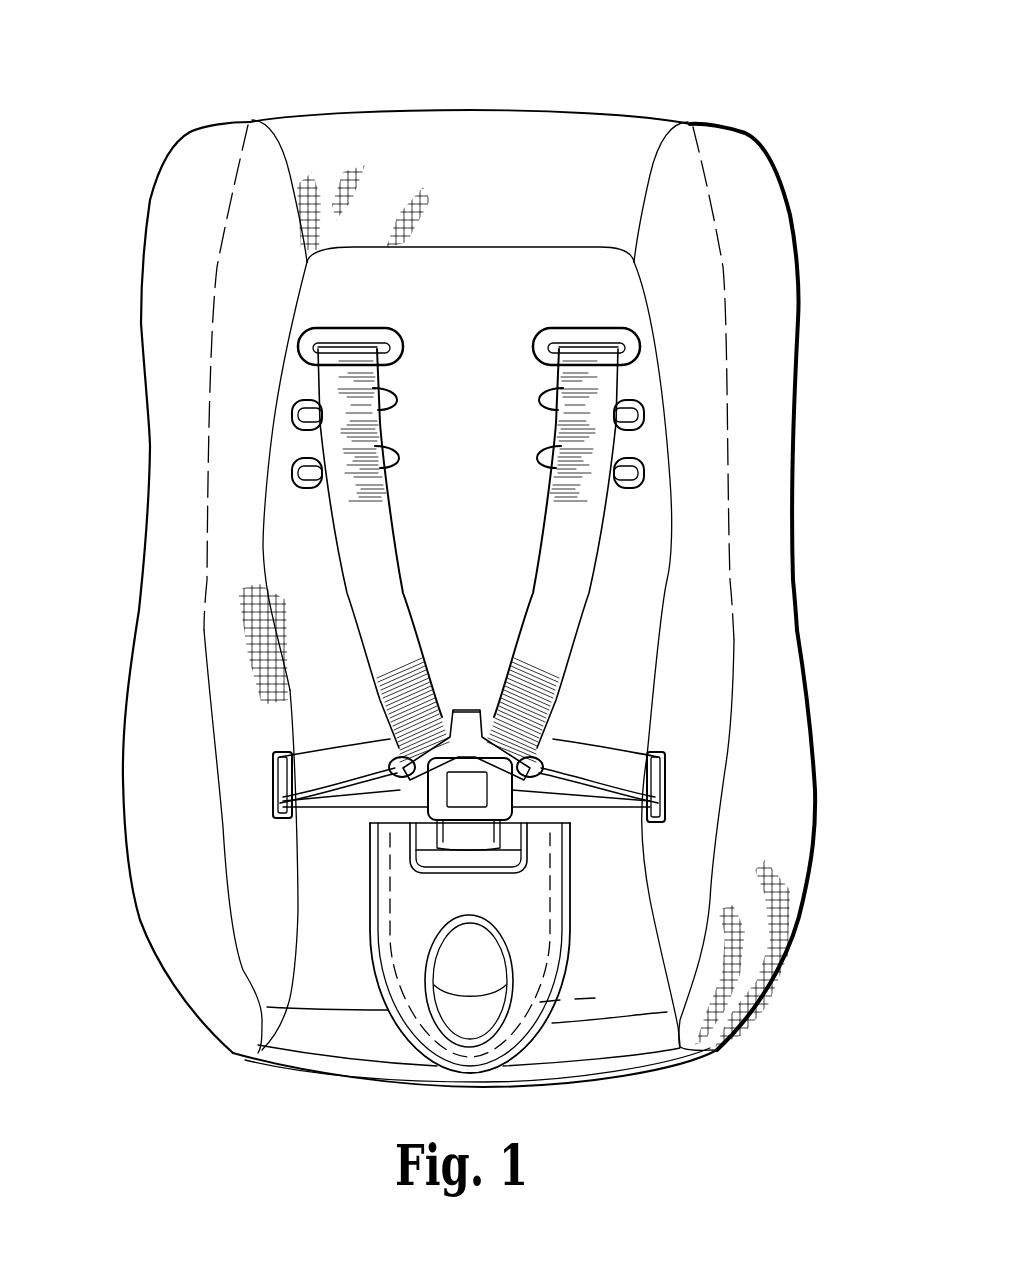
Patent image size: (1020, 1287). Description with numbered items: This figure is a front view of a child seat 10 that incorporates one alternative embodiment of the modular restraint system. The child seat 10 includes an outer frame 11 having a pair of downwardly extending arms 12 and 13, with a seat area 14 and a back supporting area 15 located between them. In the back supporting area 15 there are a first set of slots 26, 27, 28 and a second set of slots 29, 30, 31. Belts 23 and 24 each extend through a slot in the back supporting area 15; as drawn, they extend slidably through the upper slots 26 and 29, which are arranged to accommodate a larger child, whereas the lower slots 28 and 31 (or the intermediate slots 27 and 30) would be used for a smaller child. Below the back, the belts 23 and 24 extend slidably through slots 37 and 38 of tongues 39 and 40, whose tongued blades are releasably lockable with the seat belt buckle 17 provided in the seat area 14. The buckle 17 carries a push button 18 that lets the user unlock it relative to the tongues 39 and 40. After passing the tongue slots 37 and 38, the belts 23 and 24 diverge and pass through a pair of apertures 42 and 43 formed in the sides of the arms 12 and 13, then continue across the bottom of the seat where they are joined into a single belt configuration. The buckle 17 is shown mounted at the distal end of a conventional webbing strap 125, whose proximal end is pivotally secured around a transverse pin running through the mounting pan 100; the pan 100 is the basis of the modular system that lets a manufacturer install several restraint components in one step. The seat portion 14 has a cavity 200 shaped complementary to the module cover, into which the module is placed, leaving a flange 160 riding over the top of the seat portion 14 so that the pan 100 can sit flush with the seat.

The child seat 10 is at (590, 58).
The outer frame 11 is at (155, 295).
The downwardly extending arm 12 is at (154, 888).
The downwardly extending arm 13 is at (767, 783).
The seat area 14 is at (608, 857).
The back supporting area 15 is at (543, 272).
The seat belt buckle 17 is at (437, 803).
The push button 18 is at (478, 802).
The belt 23 is at (347, 402).
The belt 24 is at (600, 393).
The slot 26 is at (402, 350).
The slot 27 is at (392, 400).
The slot 28 is at (392, 456).
The slot 29 is at (542, 342).
The slot 30 is at (548, 398).
The slot 31 is at (549, 456).
The slot of tongue 37 is at (461, 708).
The slot of tongue 38 is at (481, 705).
The tongue 39 is at (370, 787).
The tongue 40 is at (560, 766).
The aperture 42 is at (271, 779).
The aperture 43 is at (665, 779).
The mounting pan 100 is at (527, 967).
The webbing strap 125 is at (447, 840).
The flange 160 is at (568, 952).
The cavity 200 is at (598, 998).